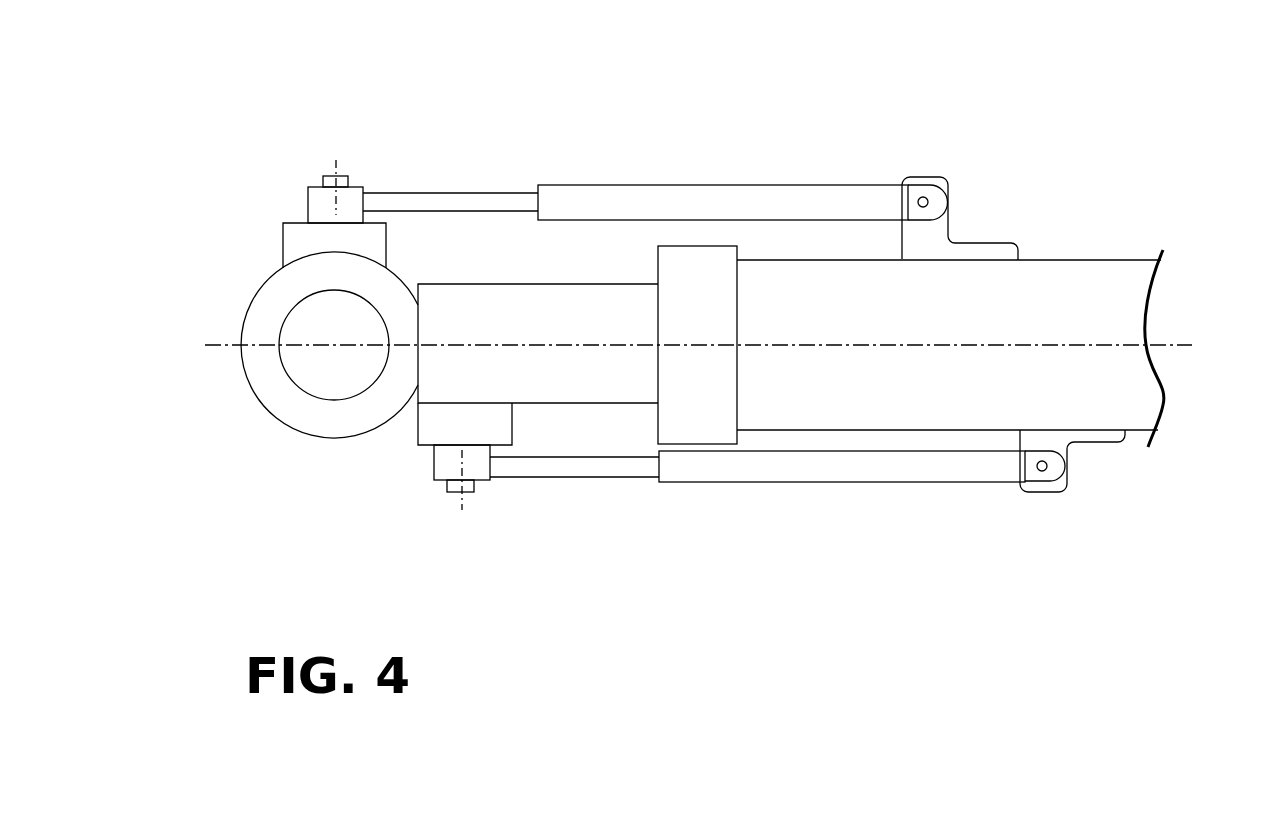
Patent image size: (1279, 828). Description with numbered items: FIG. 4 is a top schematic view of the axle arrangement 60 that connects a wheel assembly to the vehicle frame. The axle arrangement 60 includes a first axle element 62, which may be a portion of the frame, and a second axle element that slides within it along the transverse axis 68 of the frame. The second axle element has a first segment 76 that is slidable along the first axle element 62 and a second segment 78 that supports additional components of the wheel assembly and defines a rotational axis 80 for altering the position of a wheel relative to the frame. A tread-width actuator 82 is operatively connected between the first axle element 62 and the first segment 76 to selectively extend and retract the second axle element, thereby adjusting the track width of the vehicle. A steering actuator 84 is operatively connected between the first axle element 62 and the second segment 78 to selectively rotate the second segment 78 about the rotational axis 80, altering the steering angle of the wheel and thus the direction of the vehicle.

The axle arrangement 60 is at (673, 126).
The first axle element 62 is at (572, 310).
The transverse axis 68 is at (1160, 345).
The first segment 76 is at (507, 300).
The second segment 78 is at (238, 368).
The rotational axis 80 is at (330, 349).
The tread-width actuator 82 is at (716, 483).
The steering actuator 84 is at (603, 185).